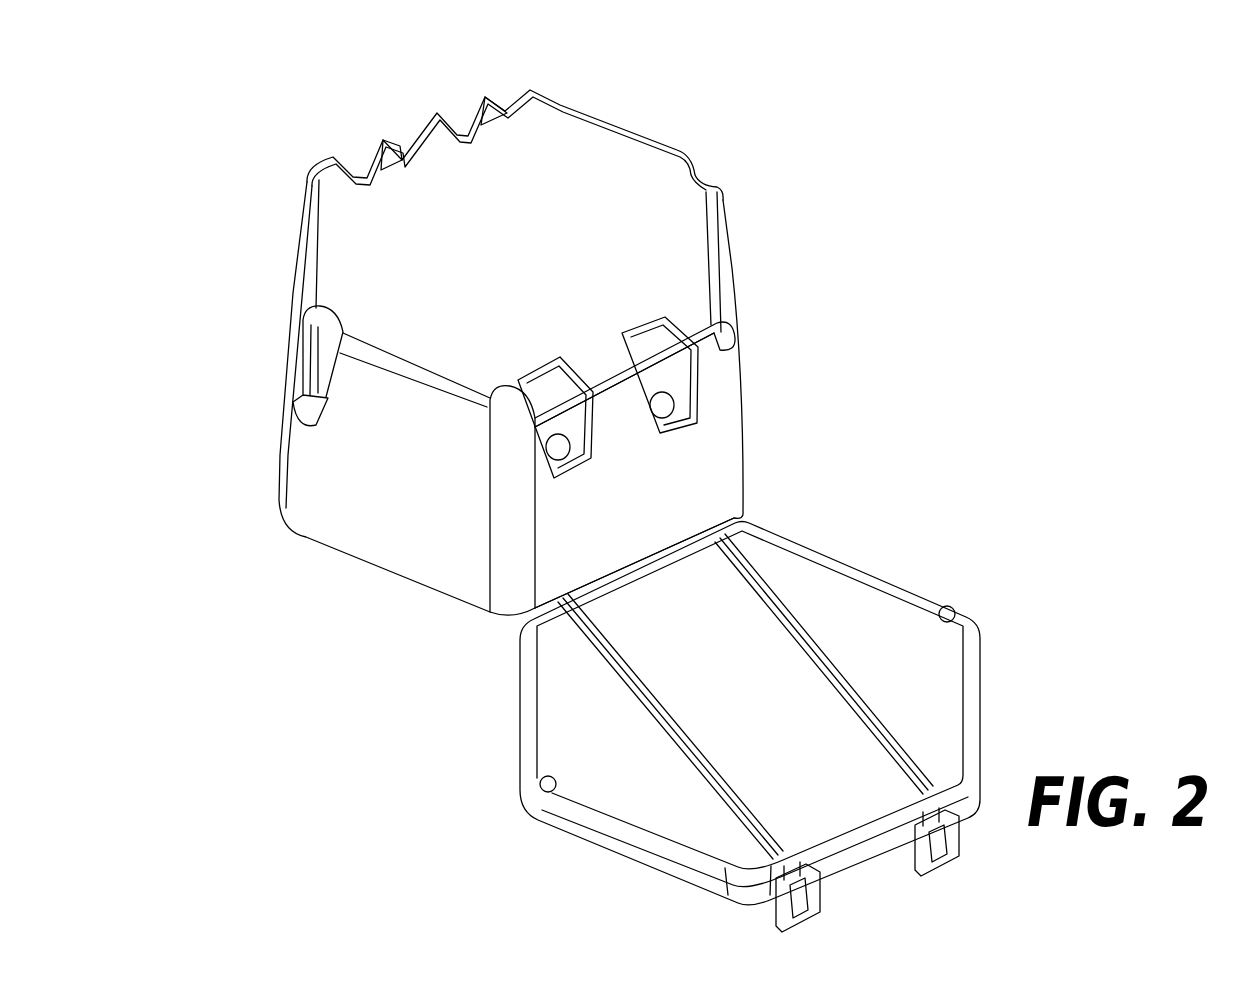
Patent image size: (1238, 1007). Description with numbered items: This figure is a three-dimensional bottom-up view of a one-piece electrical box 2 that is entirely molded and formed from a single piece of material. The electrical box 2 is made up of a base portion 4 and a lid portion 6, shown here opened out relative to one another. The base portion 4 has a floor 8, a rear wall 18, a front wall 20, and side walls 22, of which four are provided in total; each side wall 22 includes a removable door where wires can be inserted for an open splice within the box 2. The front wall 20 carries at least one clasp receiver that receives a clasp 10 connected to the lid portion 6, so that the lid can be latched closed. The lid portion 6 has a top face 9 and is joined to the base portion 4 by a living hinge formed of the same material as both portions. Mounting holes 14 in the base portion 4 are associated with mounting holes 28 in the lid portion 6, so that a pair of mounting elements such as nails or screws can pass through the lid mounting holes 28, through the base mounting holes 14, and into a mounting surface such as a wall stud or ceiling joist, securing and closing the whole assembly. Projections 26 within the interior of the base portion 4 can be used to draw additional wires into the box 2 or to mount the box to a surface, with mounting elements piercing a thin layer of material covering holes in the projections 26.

The one-piece electrical box 2 is at (160, 99).
The base portion 4 is at (782, 239).
The lid portion 6 is at (1037, 604).
The floor 8 is at (550, 145).
The top face 9 is at (807, 737).
The clasp 10 is at (913, 870).
The mounting holes 14 is at (297, 400).
The rear wall 18 is at (653, 467).
The front wall 20 is at (395, 115).
The side walls 22 is at (732, 270).
The projections 26 is at (658, 375).
The mounting holes 28 is at (946, 608).